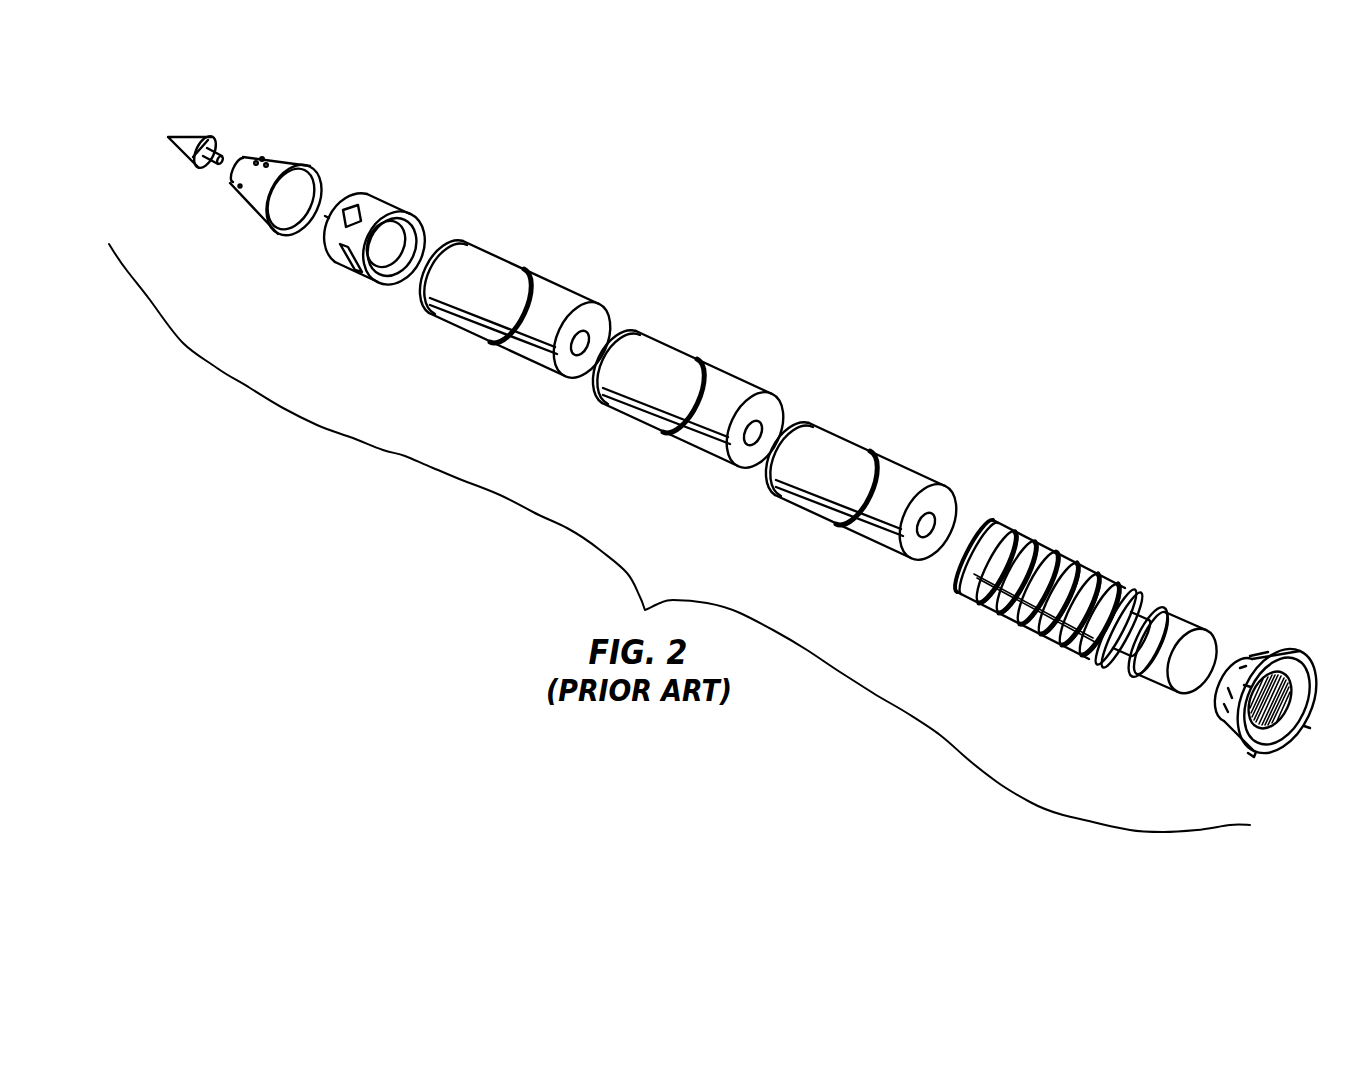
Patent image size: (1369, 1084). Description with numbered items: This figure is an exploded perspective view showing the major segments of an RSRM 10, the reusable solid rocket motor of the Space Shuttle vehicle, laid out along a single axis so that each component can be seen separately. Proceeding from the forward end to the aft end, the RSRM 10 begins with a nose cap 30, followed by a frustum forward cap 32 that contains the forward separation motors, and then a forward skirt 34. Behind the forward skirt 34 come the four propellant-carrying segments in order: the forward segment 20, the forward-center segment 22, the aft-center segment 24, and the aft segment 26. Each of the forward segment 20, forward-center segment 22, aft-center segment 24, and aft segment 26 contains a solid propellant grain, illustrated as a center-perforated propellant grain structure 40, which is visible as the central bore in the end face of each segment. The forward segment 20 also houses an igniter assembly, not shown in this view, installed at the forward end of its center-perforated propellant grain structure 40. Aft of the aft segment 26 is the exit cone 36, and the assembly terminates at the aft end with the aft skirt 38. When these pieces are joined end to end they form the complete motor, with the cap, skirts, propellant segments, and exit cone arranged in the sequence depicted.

The RSRM 10 is at (424, 508).
The forward segment 20 is at (510, 256).
The forward-center segment 22 is at (740, 377).
The aft-center segment 24 is at (860, 440).
The aft segment 26 is at (1047, 553).
The nose cap 30 is at (192, 133).
The frustum forward cap 32 is at (288, 158).
The forward skirt 34 is at (380, 190).
The exit cone 36 is at (1173, 605).
The aft skirt 38 is at (1208, 708).
The center-perforated propellant grain structure 40 is at (590, 320).